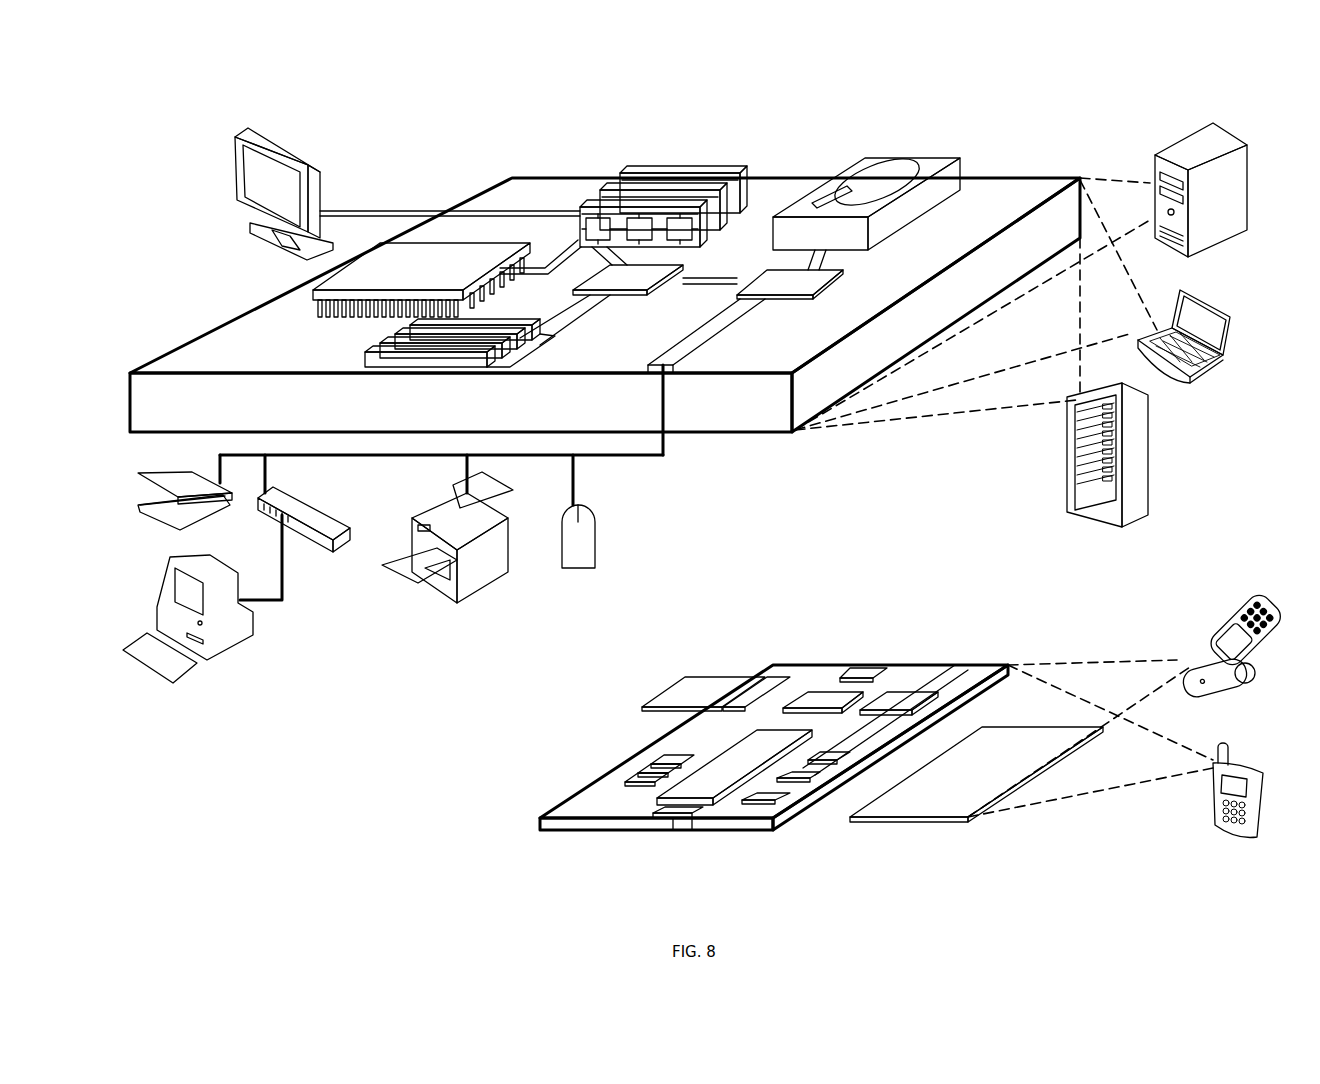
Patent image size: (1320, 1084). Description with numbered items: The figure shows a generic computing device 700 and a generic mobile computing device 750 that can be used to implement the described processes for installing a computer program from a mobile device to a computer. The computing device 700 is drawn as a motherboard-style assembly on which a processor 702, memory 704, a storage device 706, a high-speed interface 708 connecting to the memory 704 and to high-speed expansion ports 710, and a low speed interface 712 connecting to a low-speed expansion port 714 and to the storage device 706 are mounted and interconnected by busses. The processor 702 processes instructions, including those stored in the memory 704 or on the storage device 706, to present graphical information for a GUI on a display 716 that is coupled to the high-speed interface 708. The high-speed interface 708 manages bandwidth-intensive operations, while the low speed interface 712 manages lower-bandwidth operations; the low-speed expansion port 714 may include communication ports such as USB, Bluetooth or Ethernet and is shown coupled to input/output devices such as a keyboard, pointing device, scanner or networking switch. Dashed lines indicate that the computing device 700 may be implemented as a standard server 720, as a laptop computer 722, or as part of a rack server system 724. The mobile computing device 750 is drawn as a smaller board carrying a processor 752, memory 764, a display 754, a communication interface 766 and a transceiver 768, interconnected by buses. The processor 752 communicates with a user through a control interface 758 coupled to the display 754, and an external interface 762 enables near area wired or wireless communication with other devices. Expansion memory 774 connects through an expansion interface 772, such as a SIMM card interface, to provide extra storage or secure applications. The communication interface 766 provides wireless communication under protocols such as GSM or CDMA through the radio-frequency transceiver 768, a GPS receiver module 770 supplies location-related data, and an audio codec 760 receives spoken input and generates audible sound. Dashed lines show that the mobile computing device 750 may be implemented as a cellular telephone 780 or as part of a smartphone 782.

The computing device 700 is at (437, 152).
The processor 702 is at (313, 300).
The memory 704 is at (633, 172).
The storage device 706 is at (858, 160).
The high-speed interface 708 is at (605, 277).
The high-speed expansion ports 710 is at (387, 340).
The low speed interface 712 is at (790, 280).
The low-speed expansion port 714 is at (673, 373).
The display 716 is at (235, 137).
The standard server 720 is at (1153, 163).
The laptop computer 722 is at (1181, 293).
The rack server system 724 is at (1067, 478).
The mobile computing device 750 is at (755, 640).
The processor 752 is at (702, 810).
The display 754 is at (970, 818).
The control interface 758 is at (822, 783).
The audio codec 760 is at (832, 757).
The external interface 762 is at (675, 820).
The memory 764 is at (627, 783).
The communication interface 766 is at (823, 697).
The transceiver 768 is at (898, 697).
The GPS receiver module 770 is at (866, 670).
The expansion interface 772 is at (753, 675).
The expansion memory 774 is at (687, 677).
The cellular telephone 780 is at (1240, 603).
The smartphone 782 is at (1222, 743).